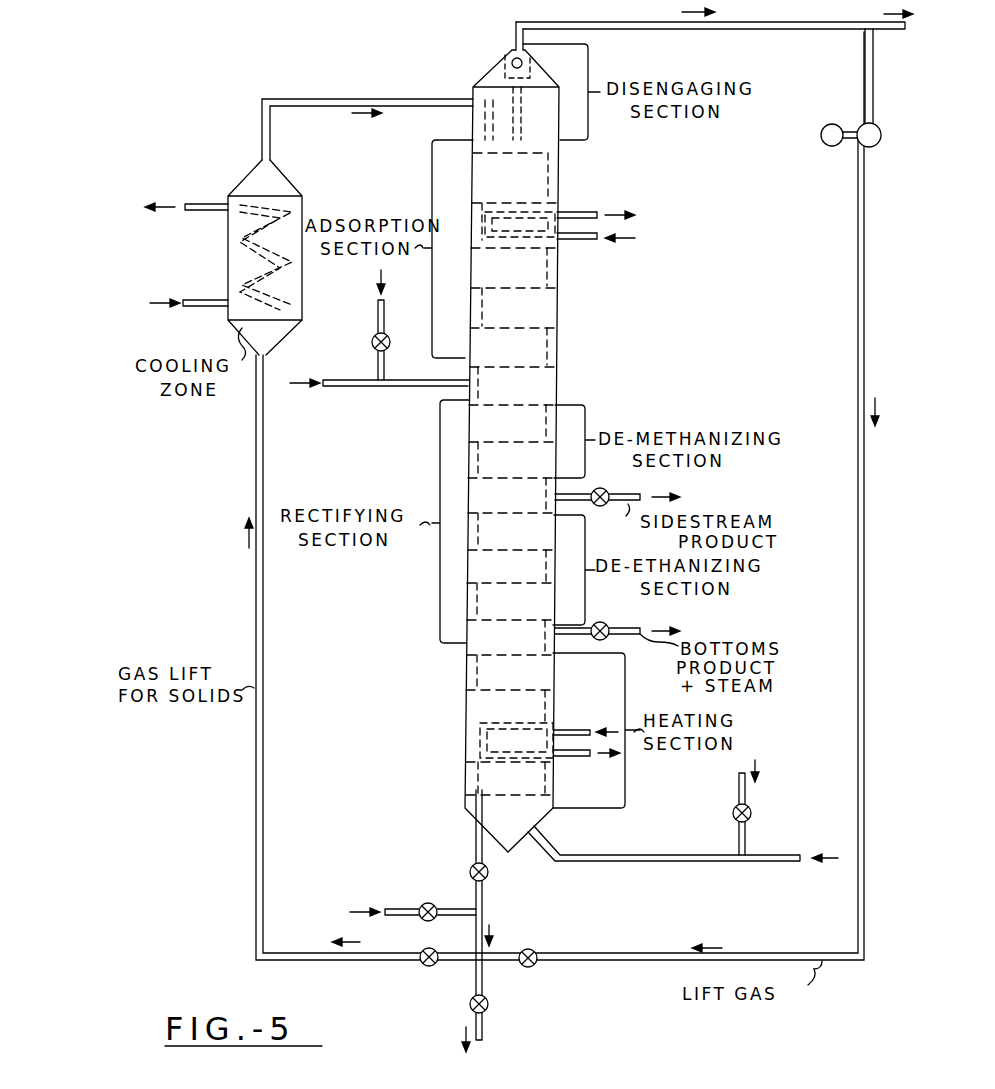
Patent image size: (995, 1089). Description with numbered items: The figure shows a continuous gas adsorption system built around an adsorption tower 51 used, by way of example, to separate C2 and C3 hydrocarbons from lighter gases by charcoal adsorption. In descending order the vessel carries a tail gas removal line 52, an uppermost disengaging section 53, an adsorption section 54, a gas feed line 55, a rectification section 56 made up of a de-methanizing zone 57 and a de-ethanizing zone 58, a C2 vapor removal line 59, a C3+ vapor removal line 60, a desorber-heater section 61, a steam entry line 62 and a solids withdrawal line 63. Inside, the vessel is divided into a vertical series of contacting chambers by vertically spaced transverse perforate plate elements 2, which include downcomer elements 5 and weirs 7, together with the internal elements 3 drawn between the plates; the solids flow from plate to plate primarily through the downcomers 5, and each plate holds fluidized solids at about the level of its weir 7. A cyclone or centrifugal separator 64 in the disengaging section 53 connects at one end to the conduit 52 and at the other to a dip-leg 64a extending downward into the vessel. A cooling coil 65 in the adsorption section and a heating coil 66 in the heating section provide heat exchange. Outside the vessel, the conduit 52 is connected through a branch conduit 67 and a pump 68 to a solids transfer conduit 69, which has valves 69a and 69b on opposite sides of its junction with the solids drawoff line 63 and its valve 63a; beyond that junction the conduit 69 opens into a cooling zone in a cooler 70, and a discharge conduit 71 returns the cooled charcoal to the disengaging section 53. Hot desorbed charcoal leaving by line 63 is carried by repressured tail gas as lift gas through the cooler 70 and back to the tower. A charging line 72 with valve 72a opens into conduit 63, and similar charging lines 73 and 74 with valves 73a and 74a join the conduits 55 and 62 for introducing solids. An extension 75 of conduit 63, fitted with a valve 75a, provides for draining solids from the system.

The perforate plate element 2 is at (516, 330).
The tray 3 is at (478, 262).
The downcomer element 5 is at (478, 218).
The weir 7 is at (478, 190).
The adsorption tower 51 is at (559, 172).
The tail gas removal line 52 is at (690, 38).
The disengaging section 53 is at (588, 62).
The adsorption section 54 is at (432, 180).
The gas feed line 55 is at (364, 388).
The rectification section 56 is at (440, 614).
The de-methanizing zone 57 is at (585, 412).
The de-ethanizing zone 58 is at (582, 538).
The C2 vapor removal line 59 is at (618, 492).
The C3+ vapor removal line 60 is at (608, 628).
The desorber-heater section 61 is at (625, 772).
The steam entry line 62 is at (658, 866).
The solids withdrawal line 63 is at (482, 890).
The valve 63a is at (473, 866).
The centrifugal separator 64 is at (508, 55).
The dip-leg 64a is at (522, 135).
The cooling coil 65 is at (600, 238).
The heating coil 66 is at (571, 732).
The branch conduit 67 is at (873, 82).
The pump 68 is at (826, 150).
The solids transfer conduit 69 is at (862, 212).
The valve 69a is at (532, 958).
The valve 69b is at (424, 966).
The cooler 70 is at (228, 250).
The discharge conduit 71 is at (391, 98).
The charging line 72 is at (408, 920).
The valve 72a is at (438, 902).
The charging line 73 is at (384, 318).
The valve 73a is at (372, 350).
The charging line 74 is at (739, 830).
The valve 74a is at (758, 808).
The extension of conduit 63 75 is at (482, 1025).
The valve 75a is at (488, 998).